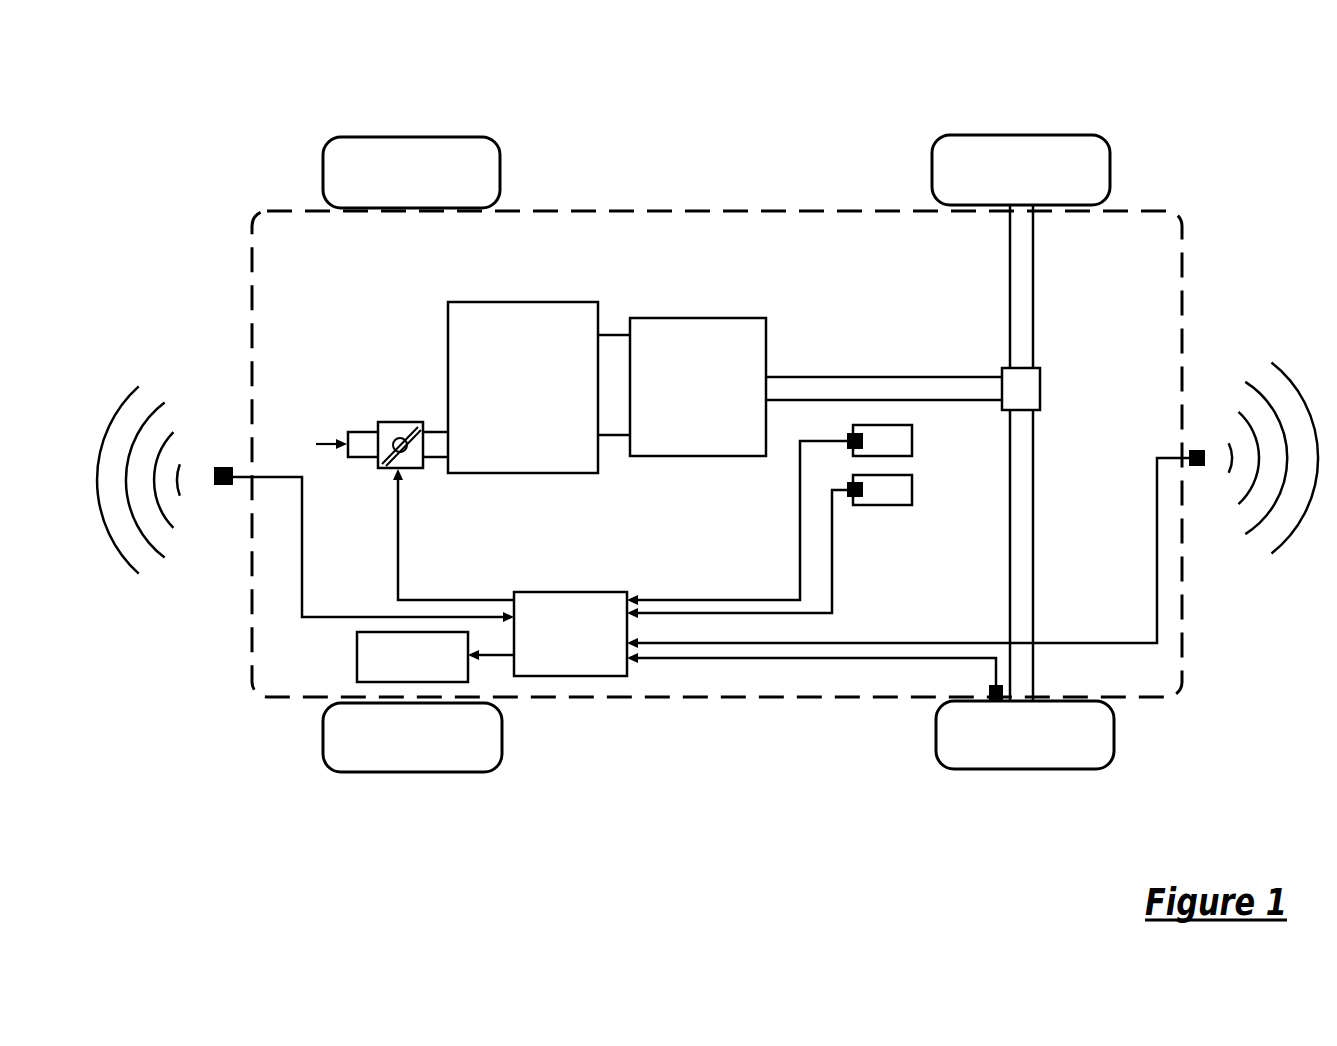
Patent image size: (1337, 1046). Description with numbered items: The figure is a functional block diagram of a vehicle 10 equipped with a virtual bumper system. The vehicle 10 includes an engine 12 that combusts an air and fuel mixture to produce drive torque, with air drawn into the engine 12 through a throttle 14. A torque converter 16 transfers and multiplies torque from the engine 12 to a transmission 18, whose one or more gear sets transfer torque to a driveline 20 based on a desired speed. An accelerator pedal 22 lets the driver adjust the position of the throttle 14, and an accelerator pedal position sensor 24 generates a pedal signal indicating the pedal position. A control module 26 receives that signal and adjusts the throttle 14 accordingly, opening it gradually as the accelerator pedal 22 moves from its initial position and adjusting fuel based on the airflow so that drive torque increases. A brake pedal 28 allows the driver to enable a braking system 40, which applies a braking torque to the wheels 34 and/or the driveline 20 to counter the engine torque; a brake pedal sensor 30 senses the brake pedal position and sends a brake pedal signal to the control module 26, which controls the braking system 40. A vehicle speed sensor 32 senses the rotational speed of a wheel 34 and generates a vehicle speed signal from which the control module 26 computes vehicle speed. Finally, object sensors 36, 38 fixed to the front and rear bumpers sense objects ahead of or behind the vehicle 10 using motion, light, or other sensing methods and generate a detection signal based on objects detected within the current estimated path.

The vehicle 10 is at (737, 72).
The engine 12 is at (523, 474).
The throttle 14 is at (397, 422).
The torque converter 16 is at (615, 440).
The transmission 18 is at (718, 456).
The driveline 20 is at (888, 377).
The accelerator pedal 22 is at (912, 440).
The accelerator pedal position sensor 24 is at (850, 436).
The control module 26 is at (568, 592).
The brake pedal 28 is at (912, 490).
The brake pedal sensor 30 is at (848, 497).
The vehicle speed sensor 32 is at (990, 687).
The wheel 34 is at (1025, 771).
The object sensor 36 is at (223, 487).
The object sensor 38 is at (1196, 468).
The braking system 40 is at (357, 652).